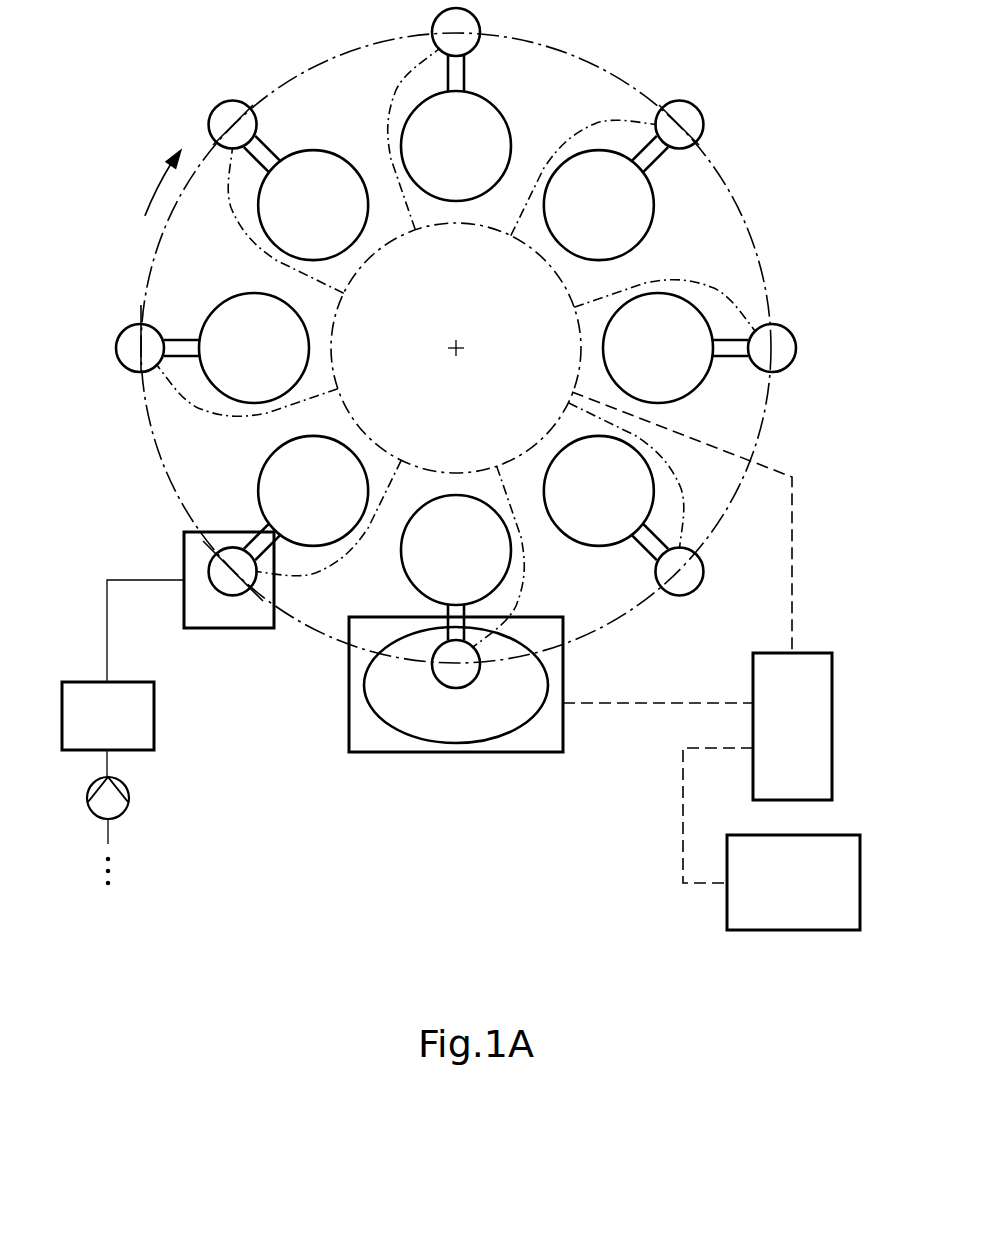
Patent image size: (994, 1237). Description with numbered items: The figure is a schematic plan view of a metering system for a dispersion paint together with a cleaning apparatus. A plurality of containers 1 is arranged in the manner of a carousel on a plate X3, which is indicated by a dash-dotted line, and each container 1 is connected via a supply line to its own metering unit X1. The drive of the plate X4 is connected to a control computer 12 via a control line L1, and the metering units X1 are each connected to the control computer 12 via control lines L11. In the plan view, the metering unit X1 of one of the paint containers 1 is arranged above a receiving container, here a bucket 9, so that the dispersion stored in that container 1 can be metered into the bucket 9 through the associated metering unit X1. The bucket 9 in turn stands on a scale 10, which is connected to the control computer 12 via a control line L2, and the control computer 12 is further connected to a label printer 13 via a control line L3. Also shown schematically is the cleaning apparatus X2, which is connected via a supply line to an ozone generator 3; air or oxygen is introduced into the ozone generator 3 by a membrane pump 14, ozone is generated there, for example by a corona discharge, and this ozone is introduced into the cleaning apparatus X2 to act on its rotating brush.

The container 1 is at (449, 159).
The ozone generator 3 is at (115, 731).
The bucket 9 is at (503, 737).
The scale 10 is at (563, 735).
The control computer 12 is at (778, 743).
The label printer 13 is at (778, 899).
The membrane pump 14 is at (126, 812).
The metering unit X1 is at (116, 352).
The cleaning apparatus X2 is at (208, 630).
The plate X3 is at (147, 268).
The drive of the plate X4 is at (150, 198).
The control line L1 is at (794, 548).
The control lines L11 is at (688, 277).
The control line L2 is at (650, 703).
The control line L3 is at (683, 840).